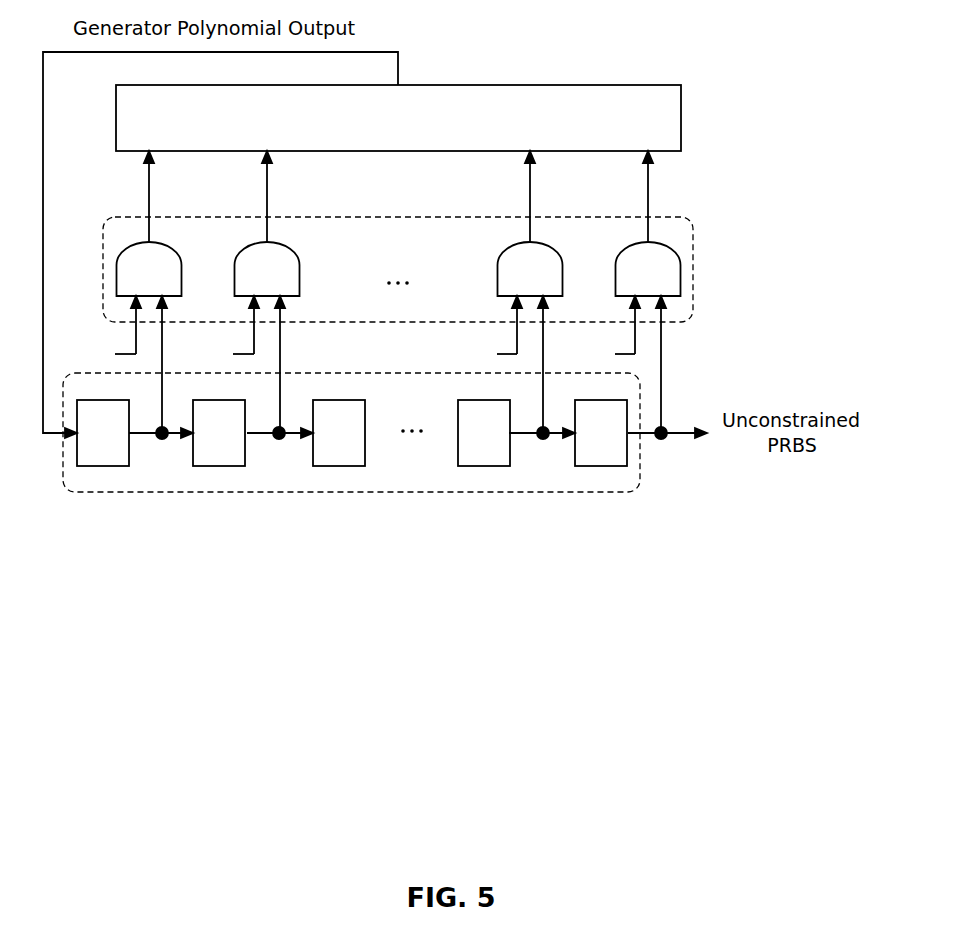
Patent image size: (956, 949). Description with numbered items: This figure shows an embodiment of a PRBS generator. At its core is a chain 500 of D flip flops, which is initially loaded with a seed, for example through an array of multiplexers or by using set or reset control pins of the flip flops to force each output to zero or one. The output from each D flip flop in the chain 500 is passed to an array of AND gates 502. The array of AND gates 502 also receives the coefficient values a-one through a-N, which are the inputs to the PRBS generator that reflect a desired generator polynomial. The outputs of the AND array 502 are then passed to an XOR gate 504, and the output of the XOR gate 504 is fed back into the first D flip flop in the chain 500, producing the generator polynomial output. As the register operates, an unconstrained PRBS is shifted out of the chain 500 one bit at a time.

The chain 500 is at (359, 494).
The array of AND gates 502 is at (695, 273).
The XOR gate 504 is at (397, 152).